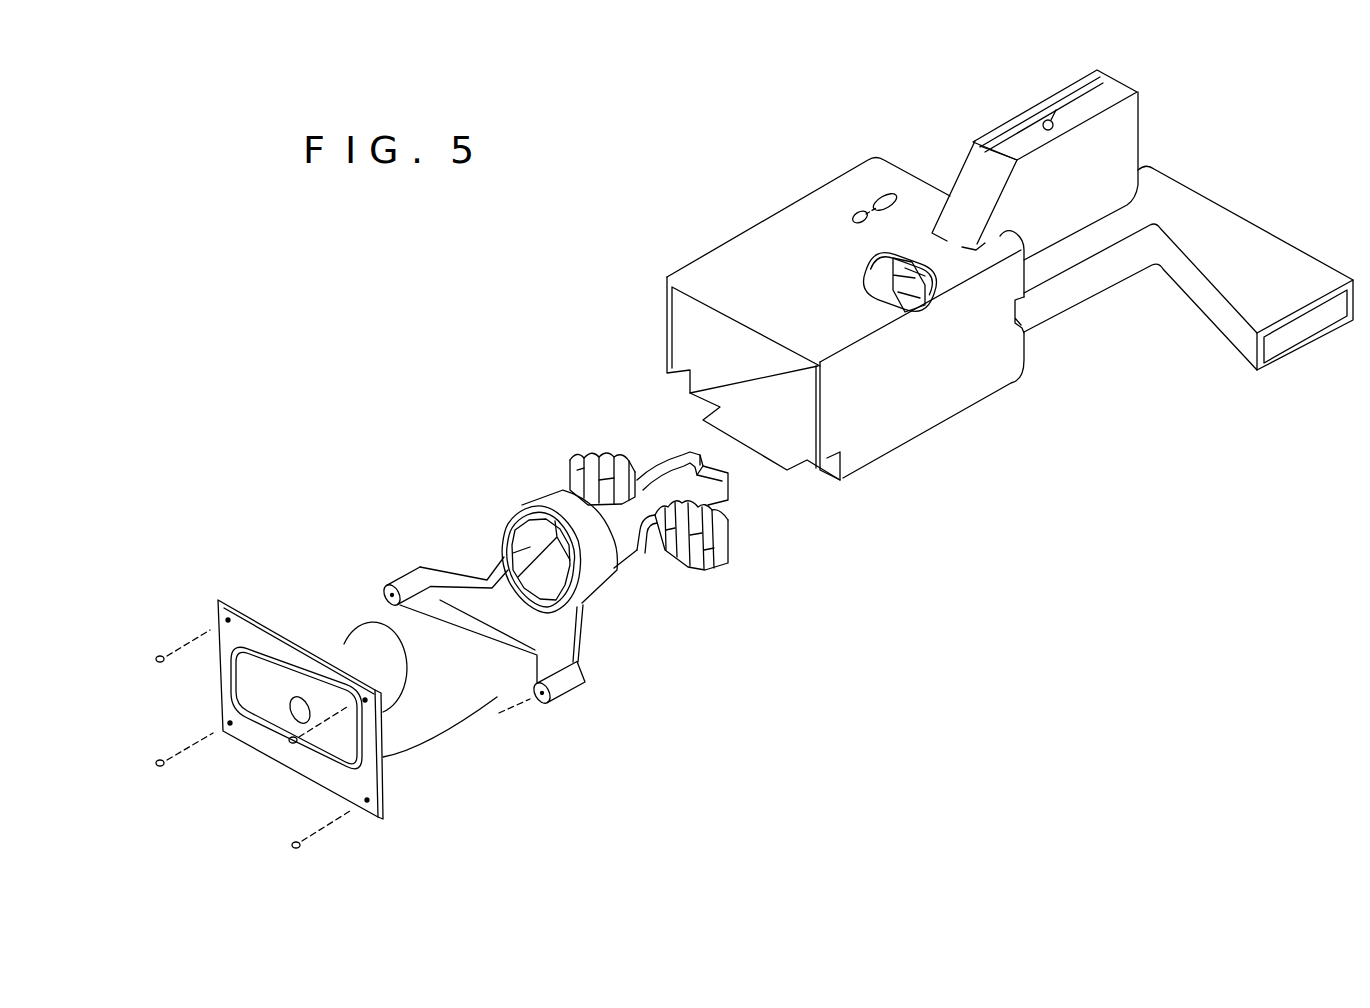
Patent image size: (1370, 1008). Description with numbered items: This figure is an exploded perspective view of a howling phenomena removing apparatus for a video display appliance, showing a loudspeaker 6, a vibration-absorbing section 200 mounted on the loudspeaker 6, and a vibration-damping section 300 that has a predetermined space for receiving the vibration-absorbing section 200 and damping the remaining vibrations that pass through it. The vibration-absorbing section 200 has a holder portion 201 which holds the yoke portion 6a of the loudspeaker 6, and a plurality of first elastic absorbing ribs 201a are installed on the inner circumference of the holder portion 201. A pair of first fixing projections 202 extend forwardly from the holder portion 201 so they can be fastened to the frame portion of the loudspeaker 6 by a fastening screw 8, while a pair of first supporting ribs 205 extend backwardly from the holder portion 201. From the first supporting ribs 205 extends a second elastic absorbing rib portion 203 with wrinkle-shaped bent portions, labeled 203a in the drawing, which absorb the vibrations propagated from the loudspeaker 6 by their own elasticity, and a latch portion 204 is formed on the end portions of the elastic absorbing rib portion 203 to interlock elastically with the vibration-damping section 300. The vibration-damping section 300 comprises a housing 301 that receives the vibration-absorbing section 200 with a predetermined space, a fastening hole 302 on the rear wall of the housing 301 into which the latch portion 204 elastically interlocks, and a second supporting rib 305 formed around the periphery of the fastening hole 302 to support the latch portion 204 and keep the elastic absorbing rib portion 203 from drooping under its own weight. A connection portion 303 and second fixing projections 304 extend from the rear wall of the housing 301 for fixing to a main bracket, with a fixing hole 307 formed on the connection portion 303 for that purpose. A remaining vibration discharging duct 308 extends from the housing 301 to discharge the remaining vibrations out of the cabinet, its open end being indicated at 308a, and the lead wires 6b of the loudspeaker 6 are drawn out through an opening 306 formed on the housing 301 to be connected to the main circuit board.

The vibration-damping section 300 is at (778, 212).
The housing 301 is at (783, 421).
The fastening hole 302 is at (928, 300).
The connection portion 303 is at (1070, 177).
The second fixing projections 304 is at (875, 198).
The second supporting rib 305 is at (905, 316).
The opening 306 is at (1027, 310).
The fixing hole 307 is at (1105, 75).
The remaining vibration discharging duct 308 is at (1262, 224).
The duct opening 308a is at (1293, 337).
The vibration-absorbing section 200 is at (537, 497).
The holder portion 201 is at (600, 577).
The first elastic absorbing ribs 201a is at (527, 549).
The first fixing projections 202 is at (563, 683).
The second elastic absorbing rib portion 203 is at (723, 570).
The contact terminals 203a is at (600, 457).
The latch portion 204 is at (678, 452).
The first supporting ribs 205 is at (630, 568).
The loudspeaker 6 is at (278, 701).
The yoke portion 6a is at (344, 635).
The lead wires 6b is at (444, 728).
The fastening screw 8 is at (297, 843).